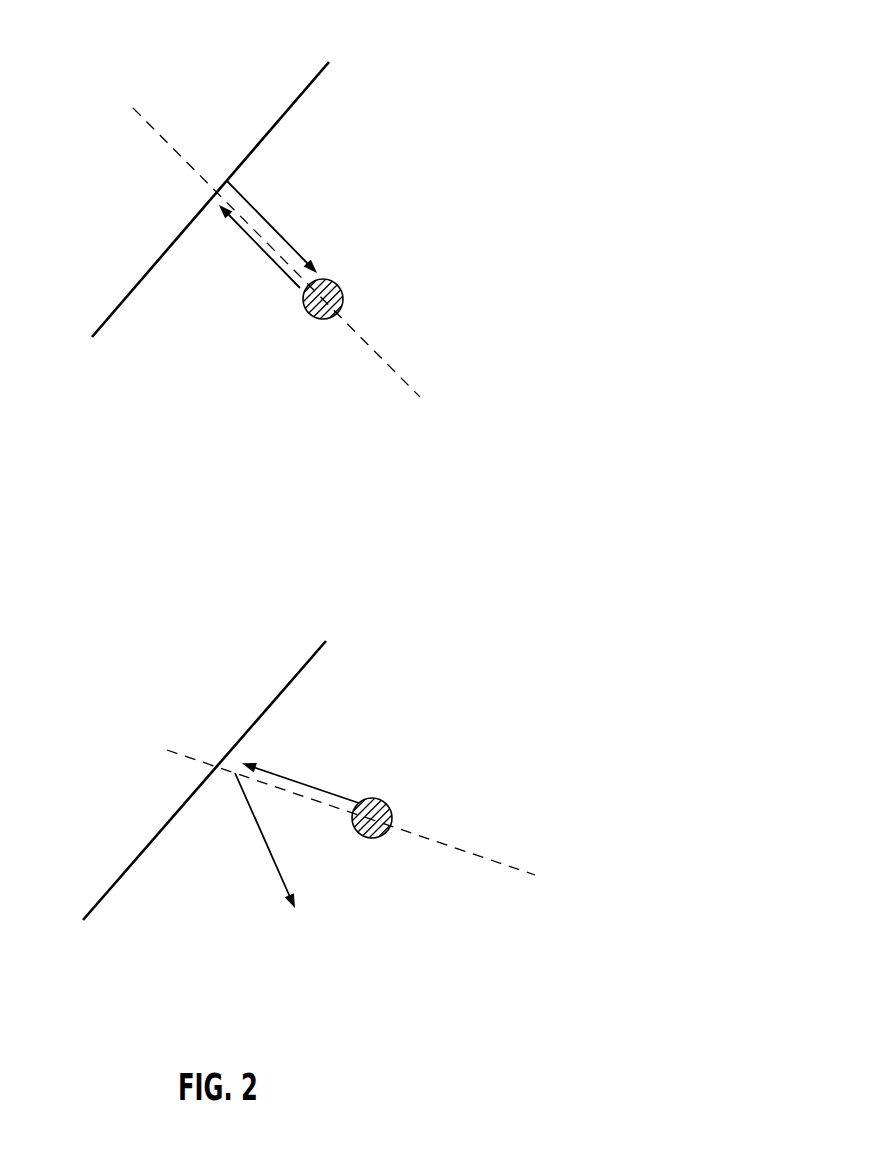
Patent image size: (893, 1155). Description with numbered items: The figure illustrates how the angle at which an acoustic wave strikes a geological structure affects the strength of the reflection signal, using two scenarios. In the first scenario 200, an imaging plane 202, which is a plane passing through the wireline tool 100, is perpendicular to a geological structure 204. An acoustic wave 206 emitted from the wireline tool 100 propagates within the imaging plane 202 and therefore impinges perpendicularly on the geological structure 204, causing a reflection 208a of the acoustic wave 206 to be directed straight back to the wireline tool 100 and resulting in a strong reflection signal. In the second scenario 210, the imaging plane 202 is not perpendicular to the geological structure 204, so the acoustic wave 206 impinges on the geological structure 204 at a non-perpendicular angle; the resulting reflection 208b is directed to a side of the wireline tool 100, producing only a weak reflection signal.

The wireline tool 100 is at (340, 283).
The first scenario 200 is at (444, 72).
The imaging plane 202 is at (183, 160).
The geological structure 204 is at (157, 260).
The acoustic wave 206 is at (267, 223).
The reflection 208a is at (278, 267).
The reflection 208b is at (267, 852).
The second scenario 210 is at (444, 638).